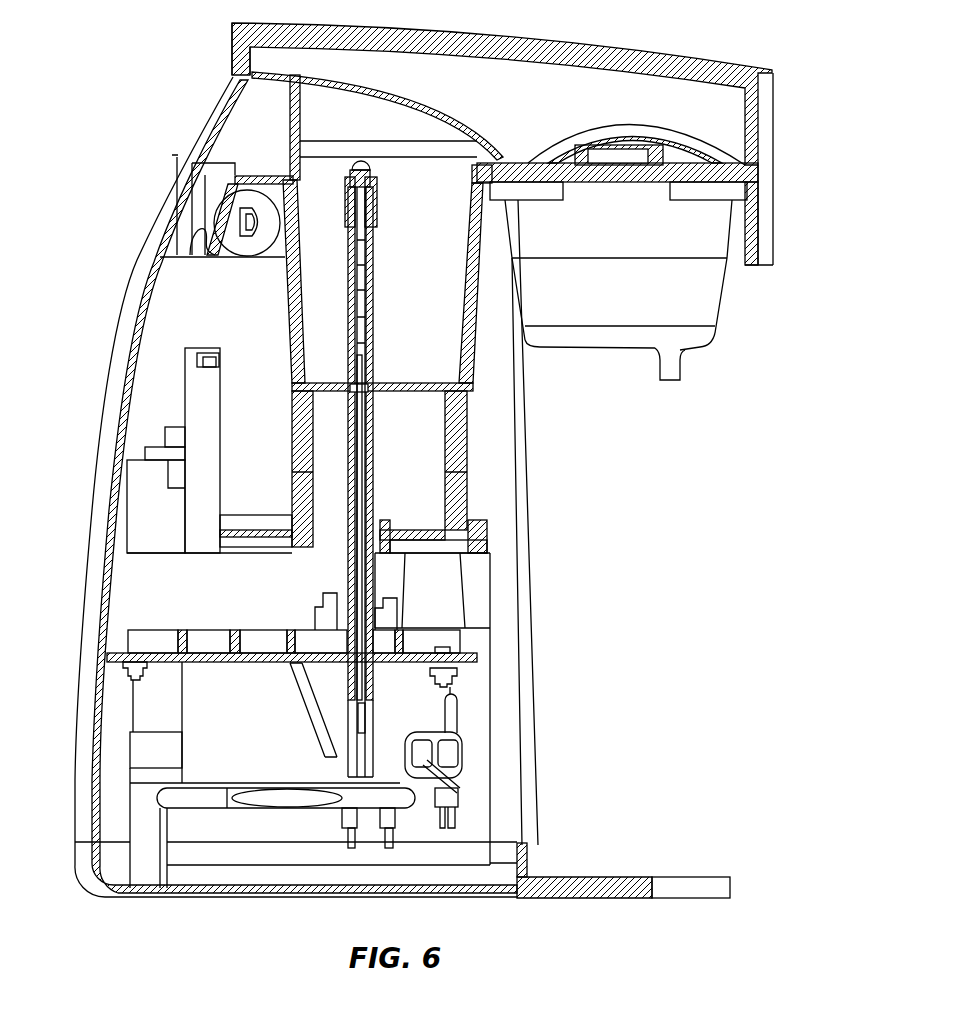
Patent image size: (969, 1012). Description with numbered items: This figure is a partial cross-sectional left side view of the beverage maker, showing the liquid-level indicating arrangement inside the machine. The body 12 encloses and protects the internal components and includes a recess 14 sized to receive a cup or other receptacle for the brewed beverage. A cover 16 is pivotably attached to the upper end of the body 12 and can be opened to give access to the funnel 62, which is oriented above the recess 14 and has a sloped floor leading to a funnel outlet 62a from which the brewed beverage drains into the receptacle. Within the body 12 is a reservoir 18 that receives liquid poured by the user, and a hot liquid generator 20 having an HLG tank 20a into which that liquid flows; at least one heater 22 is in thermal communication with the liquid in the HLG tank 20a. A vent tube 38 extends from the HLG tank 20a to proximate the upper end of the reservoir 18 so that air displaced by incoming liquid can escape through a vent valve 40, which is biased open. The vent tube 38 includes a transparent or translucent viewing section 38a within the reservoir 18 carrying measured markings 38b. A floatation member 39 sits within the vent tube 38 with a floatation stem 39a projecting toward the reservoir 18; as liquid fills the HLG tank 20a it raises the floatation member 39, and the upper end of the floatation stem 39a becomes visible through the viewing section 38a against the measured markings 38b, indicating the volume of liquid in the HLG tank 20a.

The body 12 is at (296, 487).
The recess 14 is at (689, 423).
The cover 16 is at (590, 43).
The reservoir 18 is at (286, 300).
The hot liquid generator 20 is at (119, 697).
The HLG tank 20a is at (197, 750).
The heater 22 is at (167, 798).
The vent tube 38 is at (375, 276).
The viewing section 38a is at (365, 304).
The measured markings 38b is at (358, 343).
The floatation member 39 is at (360, 732).
The floatation stem 39a is at (362, 370).
The vent valve 40 is at (363, 160).
The funnel 62 is at (718, 293).
The funnel outlet 62a is at (680, 373).